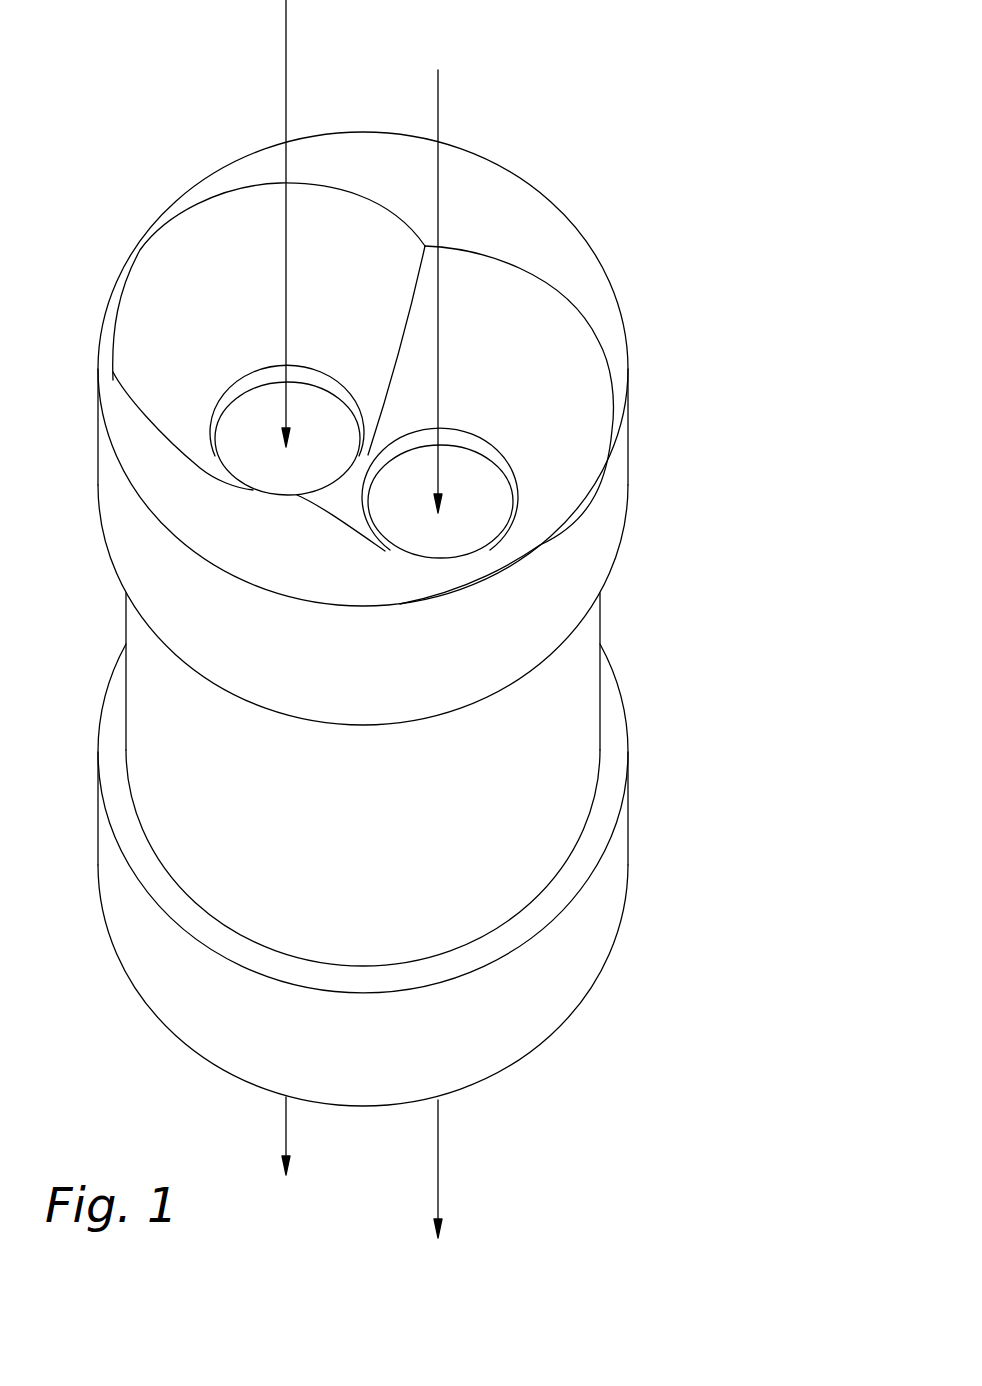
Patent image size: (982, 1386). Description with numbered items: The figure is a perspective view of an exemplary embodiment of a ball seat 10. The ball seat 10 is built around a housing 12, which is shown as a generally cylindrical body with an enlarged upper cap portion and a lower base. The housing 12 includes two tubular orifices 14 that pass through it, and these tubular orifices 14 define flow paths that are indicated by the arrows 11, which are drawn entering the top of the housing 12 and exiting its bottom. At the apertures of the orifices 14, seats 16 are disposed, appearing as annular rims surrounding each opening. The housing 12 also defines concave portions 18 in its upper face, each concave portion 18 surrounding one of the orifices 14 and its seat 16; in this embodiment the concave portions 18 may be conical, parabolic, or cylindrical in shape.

The ball seat 10 is at (392, 619).
The arrows 11 is at (285, 46).
The housing 12 is at (628, 832).
The tubular orifices 14 is at (243, 427).
The seats 16 is at (325, 380).
The concave portions 18 is at (163, 287).